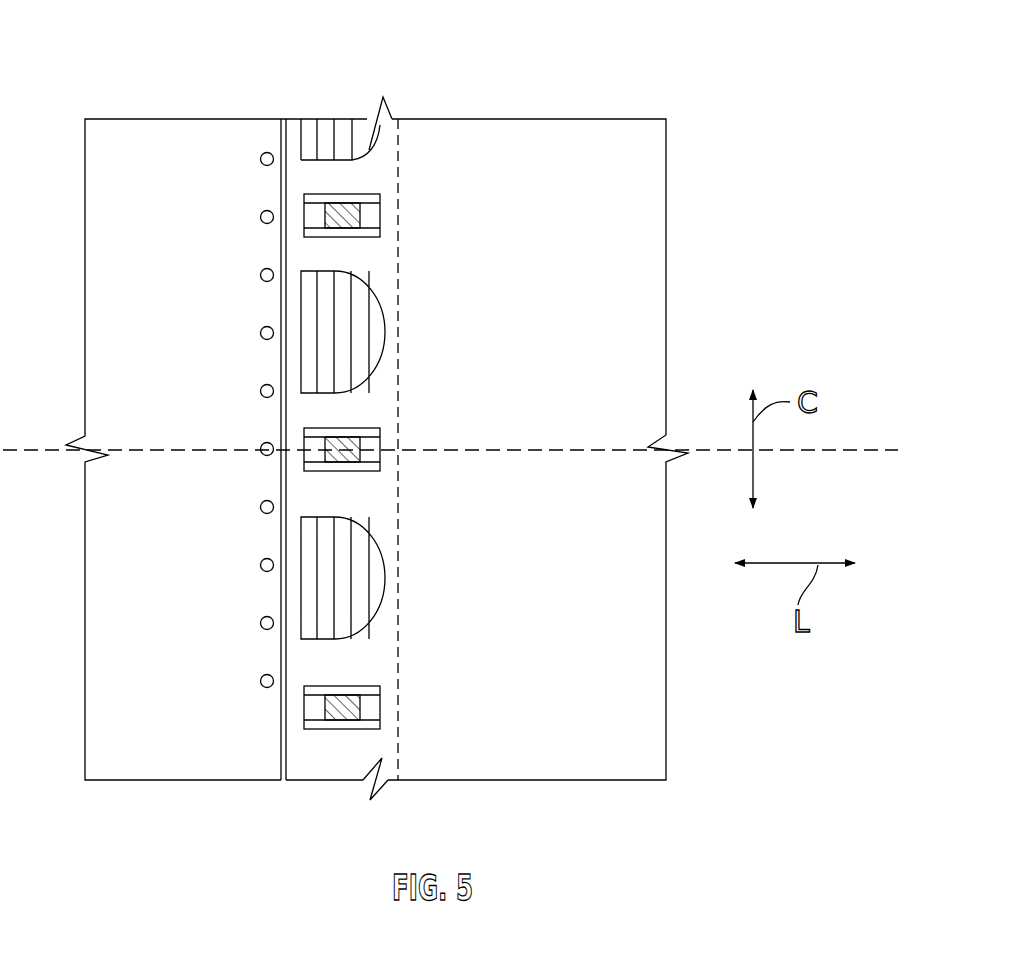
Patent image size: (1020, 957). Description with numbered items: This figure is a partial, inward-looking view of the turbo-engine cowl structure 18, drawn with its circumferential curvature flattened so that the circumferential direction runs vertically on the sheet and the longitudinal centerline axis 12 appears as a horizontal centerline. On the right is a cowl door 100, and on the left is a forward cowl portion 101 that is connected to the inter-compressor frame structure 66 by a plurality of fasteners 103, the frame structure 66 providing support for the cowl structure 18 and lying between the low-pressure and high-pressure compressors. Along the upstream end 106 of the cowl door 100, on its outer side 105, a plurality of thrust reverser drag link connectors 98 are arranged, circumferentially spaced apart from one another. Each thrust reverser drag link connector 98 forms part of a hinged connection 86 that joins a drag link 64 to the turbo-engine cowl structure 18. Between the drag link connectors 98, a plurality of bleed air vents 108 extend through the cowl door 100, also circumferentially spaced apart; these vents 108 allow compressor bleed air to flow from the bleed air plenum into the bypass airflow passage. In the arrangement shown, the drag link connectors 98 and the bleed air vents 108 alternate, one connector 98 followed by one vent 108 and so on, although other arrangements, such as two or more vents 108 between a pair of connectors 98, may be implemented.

The longitudinal centerline axis 12 is at (840, 451).
The turbo-engine cowl structure 18 is at (453, 111).
The drag link 64 is at (345, 213).
The inter-compressor frame structure 66 is at (398, 487).
The hinged connections 86 is at (298, 231).
The thrust reverser drag link connectors 98 is at (371, 194).
The cowl door 100 is at (607, 133).
The forward cowl portion 101 is at (200, 133).
The fasteners 103 is at (261, 212).
The outer side 105 is at (637, 164).
The upstream end 106 is at (387, 137).
The bleed air vents 108 is at (380, 326).